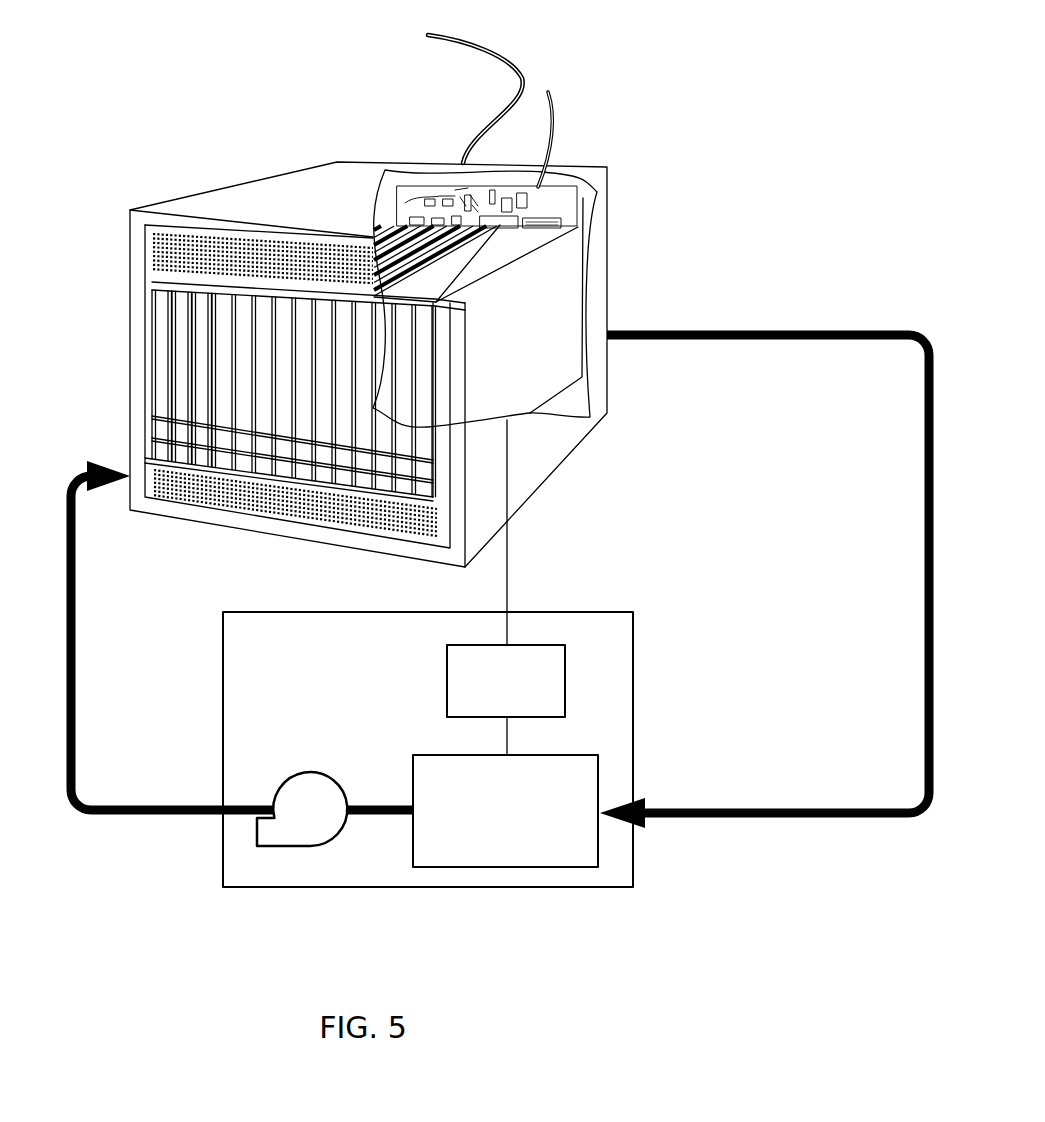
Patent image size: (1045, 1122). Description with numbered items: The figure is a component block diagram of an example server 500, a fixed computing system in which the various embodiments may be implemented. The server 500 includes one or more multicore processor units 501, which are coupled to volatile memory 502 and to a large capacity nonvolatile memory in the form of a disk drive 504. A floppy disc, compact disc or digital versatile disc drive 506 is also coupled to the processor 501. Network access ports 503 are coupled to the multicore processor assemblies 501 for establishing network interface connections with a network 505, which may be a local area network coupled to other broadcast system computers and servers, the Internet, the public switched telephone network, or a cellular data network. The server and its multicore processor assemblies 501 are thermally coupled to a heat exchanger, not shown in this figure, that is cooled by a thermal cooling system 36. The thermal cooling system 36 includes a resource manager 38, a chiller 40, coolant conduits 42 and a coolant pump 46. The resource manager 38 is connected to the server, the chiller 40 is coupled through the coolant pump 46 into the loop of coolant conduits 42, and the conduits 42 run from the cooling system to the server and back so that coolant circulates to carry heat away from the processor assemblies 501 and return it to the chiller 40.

The server 500 is at (102, 90).
The multicore processor unit 501 is at (525, 232).
The volatile memory 502 is at (520, 232).
The network access ports 503 is at (198, 335).
The disk drive 504 is at (177, 362).
The network 505 is at (524, 80).
The disc drive 506 is at (218, 393).
The thermal cooling system 36 is at (223, 665).
The resource manager 38 is at (480, 644).
The chiller 40 is at (447, 754).
The coolant conduits 42 is at (77, 710).
The coolant pump 46 is at (287, 776).